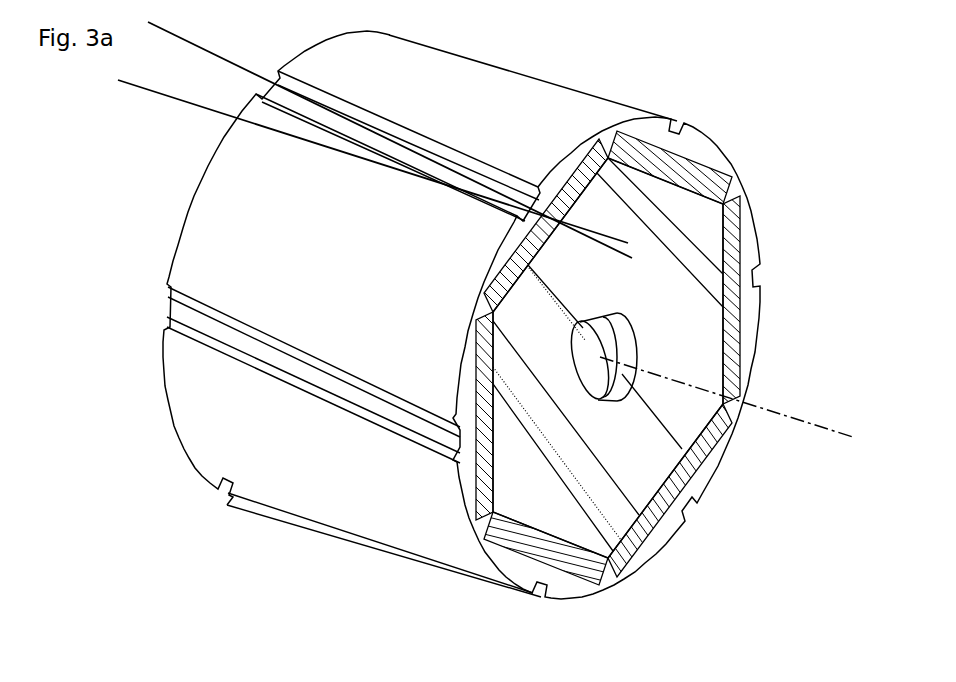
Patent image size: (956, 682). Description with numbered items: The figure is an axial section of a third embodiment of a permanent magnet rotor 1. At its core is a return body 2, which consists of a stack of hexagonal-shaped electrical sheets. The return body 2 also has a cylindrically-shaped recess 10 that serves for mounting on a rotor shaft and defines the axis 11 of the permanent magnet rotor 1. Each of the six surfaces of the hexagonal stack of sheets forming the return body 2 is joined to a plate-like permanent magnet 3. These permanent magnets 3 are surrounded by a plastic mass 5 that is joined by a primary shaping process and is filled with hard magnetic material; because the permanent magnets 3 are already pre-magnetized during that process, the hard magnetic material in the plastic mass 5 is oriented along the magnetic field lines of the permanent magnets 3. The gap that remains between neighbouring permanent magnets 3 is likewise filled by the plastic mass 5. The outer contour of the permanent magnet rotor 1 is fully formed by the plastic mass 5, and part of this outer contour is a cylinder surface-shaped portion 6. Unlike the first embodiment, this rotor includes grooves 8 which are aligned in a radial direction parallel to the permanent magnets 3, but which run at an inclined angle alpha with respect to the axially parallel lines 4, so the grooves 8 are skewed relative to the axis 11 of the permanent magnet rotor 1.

The permanent magnet rotor 1 is at (470, 312).
The return body 2 is at (667, 340).
The permanent magnets 3 is at (703, 445).
The axially parallel lines 4 is at (172, 100).
The plastic mass 5 is at (612, 142).
The cylinder surface-shaped outer contour 6 is at (747, 186).
The grooves 8 is at (674, 127).
The cylindrically-shaped recess 10 is at (627, 338).
The axis 11 is at (838, 430).